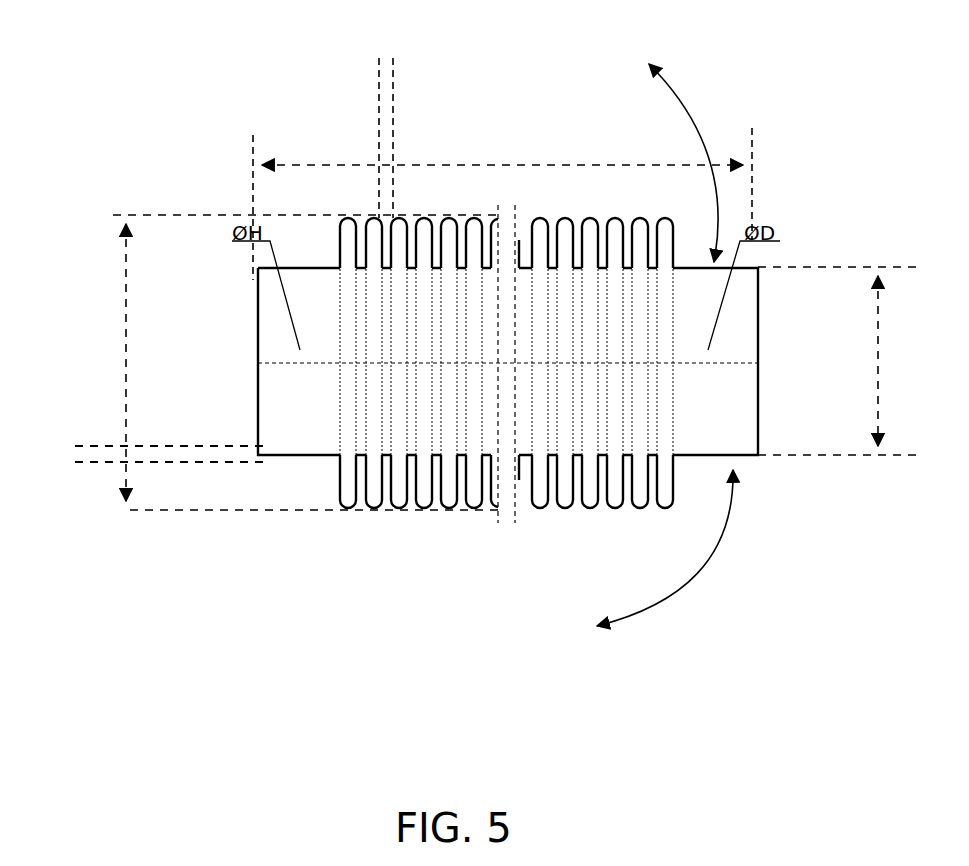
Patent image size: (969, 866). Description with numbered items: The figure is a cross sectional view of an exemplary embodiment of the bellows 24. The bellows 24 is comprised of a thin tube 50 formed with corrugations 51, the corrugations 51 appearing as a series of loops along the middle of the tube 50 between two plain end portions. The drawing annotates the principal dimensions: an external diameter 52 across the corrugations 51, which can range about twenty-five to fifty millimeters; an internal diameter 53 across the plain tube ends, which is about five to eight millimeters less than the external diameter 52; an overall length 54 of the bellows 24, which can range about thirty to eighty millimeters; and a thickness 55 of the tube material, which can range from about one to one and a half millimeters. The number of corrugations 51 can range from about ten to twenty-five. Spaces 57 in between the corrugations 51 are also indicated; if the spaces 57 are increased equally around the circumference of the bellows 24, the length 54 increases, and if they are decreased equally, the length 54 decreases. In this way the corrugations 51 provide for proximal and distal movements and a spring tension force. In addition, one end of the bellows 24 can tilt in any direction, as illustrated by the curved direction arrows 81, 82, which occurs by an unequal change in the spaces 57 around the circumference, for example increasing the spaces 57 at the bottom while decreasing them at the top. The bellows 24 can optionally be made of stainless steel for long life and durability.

The bellows 24 is at (148, 648).
The thin tube 50 is at (291, 460).
The corrugations 51 is at (473, 508).
The external diameter 52 is at (305, 362).
The internal diameter 53 is at (839, 361).
The length 54 is at (502, 204).
The thickness 55 is at (146, 453).
The spaces 57 is at (395, 115).
The direction arrow 81 is at (657, 152).
The direction arrow 82 is at (665, 548).